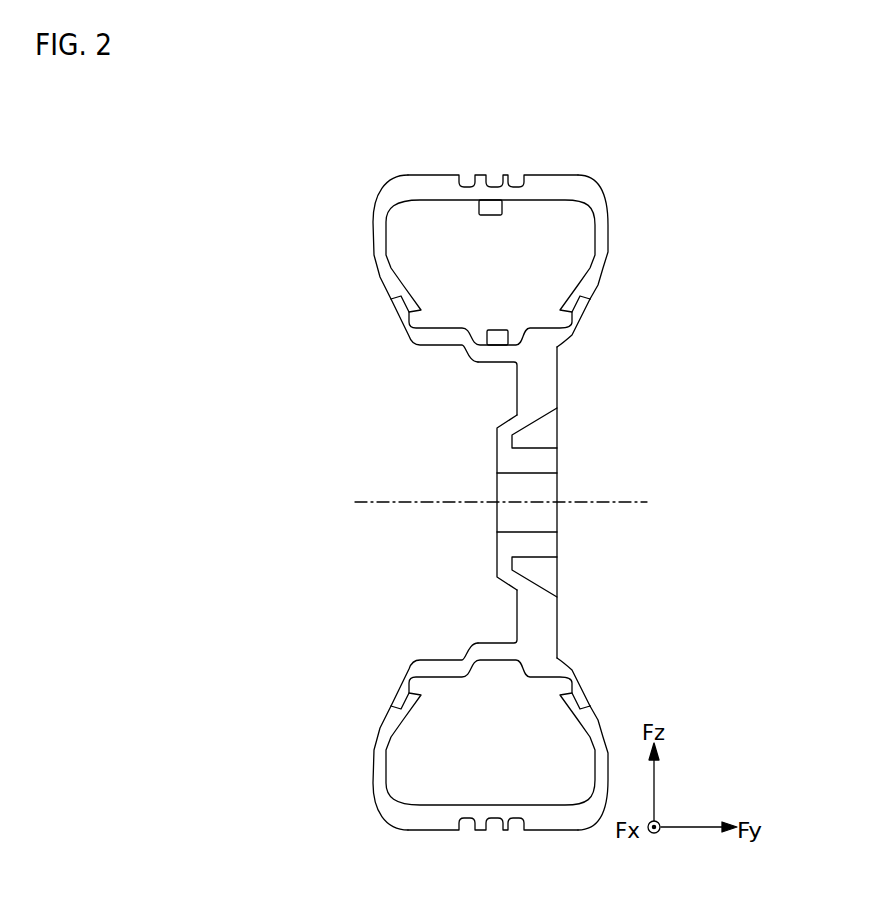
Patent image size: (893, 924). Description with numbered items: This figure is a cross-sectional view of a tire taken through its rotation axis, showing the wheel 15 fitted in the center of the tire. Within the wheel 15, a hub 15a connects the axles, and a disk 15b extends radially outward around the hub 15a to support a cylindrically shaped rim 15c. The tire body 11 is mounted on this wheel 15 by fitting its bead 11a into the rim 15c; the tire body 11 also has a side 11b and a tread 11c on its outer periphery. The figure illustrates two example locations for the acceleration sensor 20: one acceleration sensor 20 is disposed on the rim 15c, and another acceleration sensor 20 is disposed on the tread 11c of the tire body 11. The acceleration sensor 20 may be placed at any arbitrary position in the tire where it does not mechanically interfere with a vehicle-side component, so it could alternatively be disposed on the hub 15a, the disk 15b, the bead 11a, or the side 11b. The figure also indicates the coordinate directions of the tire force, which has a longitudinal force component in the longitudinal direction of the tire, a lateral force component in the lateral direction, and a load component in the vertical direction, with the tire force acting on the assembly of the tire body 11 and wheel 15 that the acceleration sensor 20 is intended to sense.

The tire body 11 is at (522, 247).
The bead 11a is at (593, 291).
The side 11b is at (608, 238).
The tread 11c is at (533, 174).
The wheel 15 is at (553, 502).
The hub 15a is at (562, 486).
The disk 15b is at (558, 382).
The rim 15c is at (473, 363).
The acceleration sensor 20 is at (492, 216).